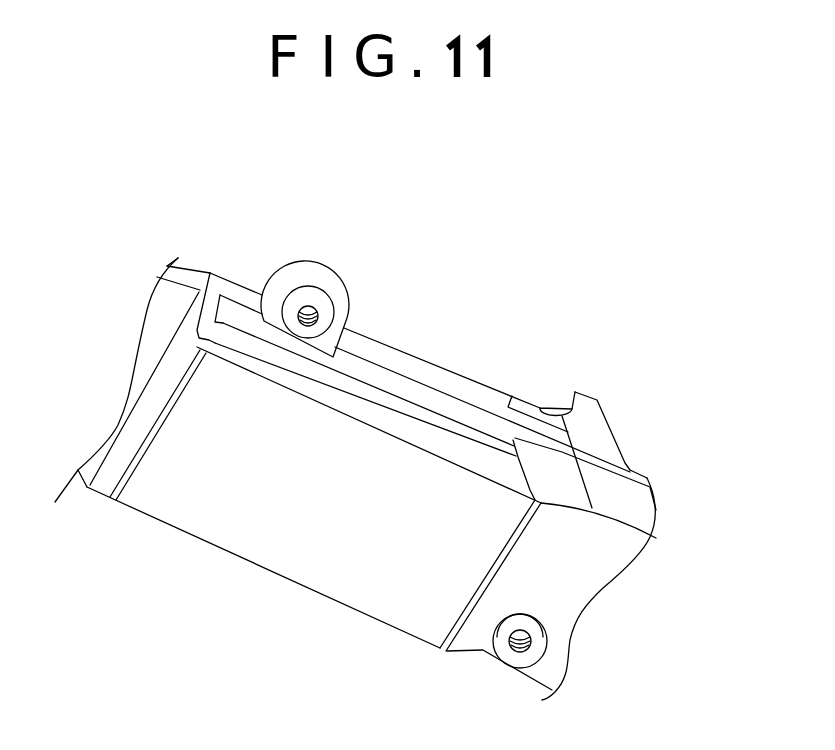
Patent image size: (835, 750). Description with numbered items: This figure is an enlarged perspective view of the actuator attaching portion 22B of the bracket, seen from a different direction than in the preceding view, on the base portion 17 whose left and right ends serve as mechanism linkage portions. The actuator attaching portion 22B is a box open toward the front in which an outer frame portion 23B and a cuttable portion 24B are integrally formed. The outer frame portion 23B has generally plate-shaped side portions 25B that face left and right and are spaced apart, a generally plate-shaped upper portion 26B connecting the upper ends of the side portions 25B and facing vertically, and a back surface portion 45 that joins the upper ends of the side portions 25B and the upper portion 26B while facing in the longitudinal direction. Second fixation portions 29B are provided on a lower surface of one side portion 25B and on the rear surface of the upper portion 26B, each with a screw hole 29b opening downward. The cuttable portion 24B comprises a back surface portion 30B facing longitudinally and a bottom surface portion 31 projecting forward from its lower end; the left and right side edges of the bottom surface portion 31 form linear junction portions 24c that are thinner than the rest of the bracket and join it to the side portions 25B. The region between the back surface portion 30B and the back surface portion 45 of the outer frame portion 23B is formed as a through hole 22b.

The base portion 17 is at (648, 468).
The actuator attaching portion 22B is at (472, 421).
The through hole 22b is at (492, 398).
The outer frame portion 23B is at (373, 352).
The cuttable portion 24B is at (228, 537).
The junction portion 24c is at (200, 352).
The side portion 25B is at (195, 314).
The upper portion 26B is at (466, 391).
The second fixation portion 29B is at (317, 263).
The screw hole 29b is at (310, 314).
The back surface portion 30B is at (350, 405).
The bottom surface portion 31 is at (184, 508).
The back surface portion 45 is at (425, 384).